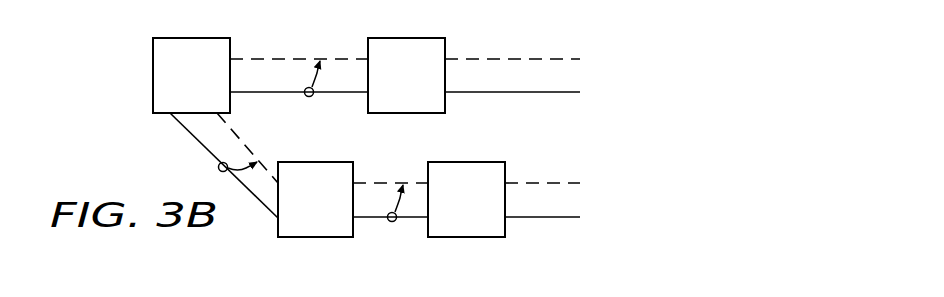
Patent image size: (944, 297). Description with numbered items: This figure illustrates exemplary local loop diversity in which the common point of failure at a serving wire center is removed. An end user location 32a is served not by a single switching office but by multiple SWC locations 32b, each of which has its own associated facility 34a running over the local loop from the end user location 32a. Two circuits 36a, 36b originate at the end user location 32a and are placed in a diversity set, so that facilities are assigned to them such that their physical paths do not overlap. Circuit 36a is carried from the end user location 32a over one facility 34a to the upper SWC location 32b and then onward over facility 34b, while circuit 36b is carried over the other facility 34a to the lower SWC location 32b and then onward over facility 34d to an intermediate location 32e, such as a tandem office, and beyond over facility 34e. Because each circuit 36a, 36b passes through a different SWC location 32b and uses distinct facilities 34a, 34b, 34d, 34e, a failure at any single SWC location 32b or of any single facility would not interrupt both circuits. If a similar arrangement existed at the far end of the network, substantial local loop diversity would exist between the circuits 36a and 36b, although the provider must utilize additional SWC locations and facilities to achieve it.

The end user location 32a is at (173, 86).
The SWC location 32b is at (388, 86).
The intermediate location 32e is at (448, 211).
The facility 34a is at (192, 138).
The facility 34b is at (498, 93).
The facility 34d is at (370, 218).
The facility 34e is at (543, 218).
The circuit 36a is at (278, 57).
The circuit 36b is at (248, 143).